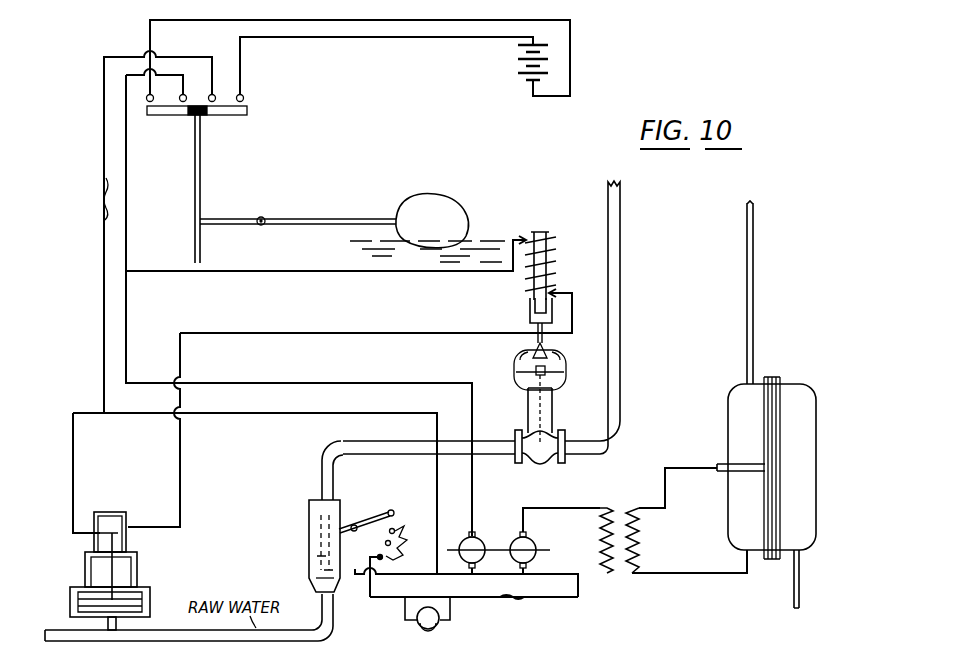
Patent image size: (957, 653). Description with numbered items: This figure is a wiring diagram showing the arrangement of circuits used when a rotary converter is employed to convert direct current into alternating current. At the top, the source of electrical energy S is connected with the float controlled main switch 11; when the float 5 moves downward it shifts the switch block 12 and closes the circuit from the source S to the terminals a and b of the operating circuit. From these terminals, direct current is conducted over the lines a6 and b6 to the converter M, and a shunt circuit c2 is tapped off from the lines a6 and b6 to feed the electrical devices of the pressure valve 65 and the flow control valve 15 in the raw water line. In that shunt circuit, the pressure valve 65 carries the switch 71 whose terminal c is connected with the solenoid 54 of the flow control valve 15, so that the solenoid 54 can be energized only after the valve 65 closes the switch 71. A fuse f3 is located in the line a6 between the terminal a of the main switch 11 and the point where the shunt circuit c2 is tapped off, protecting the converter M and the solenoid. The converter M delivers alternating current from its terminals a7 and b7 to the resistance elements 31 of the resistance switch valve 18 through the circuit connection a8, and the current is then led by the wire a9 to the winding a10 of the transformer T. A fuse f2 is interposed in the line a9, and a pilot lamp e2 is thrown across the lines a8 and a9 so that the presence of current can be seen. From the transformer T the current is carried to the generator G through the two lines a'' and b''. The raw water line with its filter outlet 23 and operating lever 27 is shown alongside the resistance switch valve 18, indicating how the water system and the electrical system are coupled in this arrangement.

The source of electrical energy S is at (360, 58).
The terminal a is at (189, 87).
The terminal b is at (220, 85).
The switch block 12 is at (172, 114).
The float controlled main switch 11 is at (221, 189).
The float 5 is at (400, 213).
The line a6 is at (94, 161).
The fuse f3 is at (93, 211).
The line b6 is at (137, 243).
The shunt circuit c2 is at (285, 305).
The solenoid 54 is at (532, 278).
The flow control valve 15 is at (481, 322).
The switch 71 is at (107, 512).
The terminal c is at (116, 522).
The pressure valve 65 is at (93, 591).
The resistance switch valve 18 is at (307, 516).
The filter outlet 23 is at (312, 572).
The lever 27 is at (373, 520).
The resistance elements 31 is at (383, 546).
The circuit connection a8 is at (422, 571).
The wire a9 is at (390, 605).
The fuse f2 is at (531, 606).
The lamp / signal e2 is at (432, 635).
The converter M is at (511, 532).
The terminal b7 is at (536, 533).
The terminal a7 is at (534, 572).
The winding a10 is at (592, 552).
The transformer T is at (624, 557).
The line b'' is at (702, 472).
The generator G is at (826, 466).
The line a'' is at (689, 577).